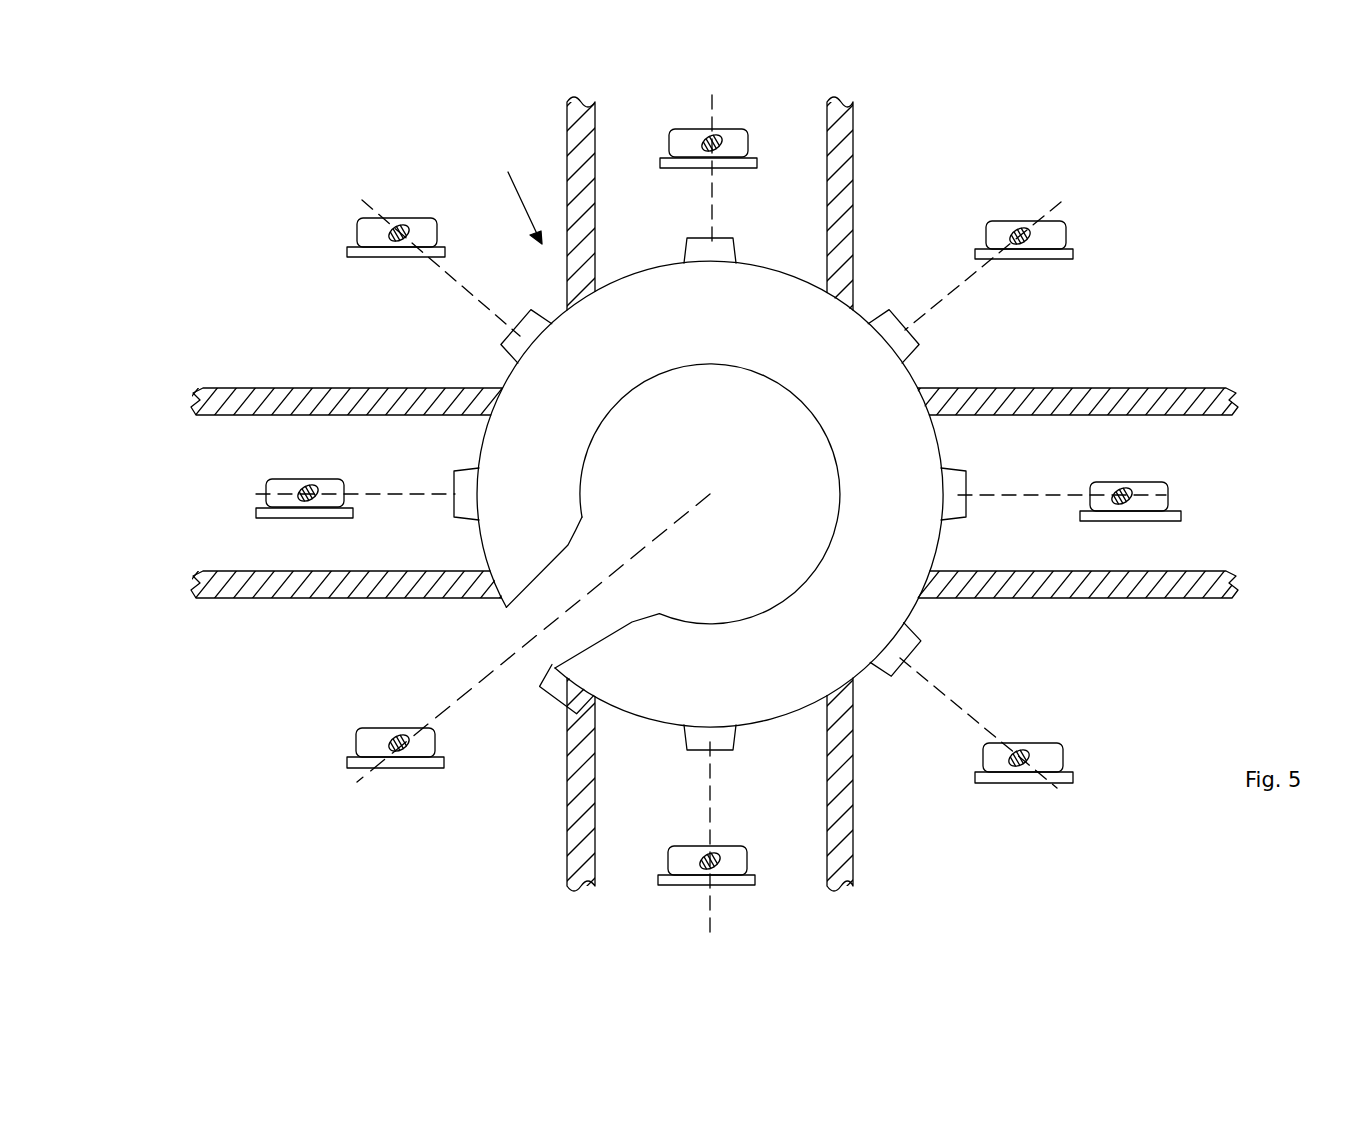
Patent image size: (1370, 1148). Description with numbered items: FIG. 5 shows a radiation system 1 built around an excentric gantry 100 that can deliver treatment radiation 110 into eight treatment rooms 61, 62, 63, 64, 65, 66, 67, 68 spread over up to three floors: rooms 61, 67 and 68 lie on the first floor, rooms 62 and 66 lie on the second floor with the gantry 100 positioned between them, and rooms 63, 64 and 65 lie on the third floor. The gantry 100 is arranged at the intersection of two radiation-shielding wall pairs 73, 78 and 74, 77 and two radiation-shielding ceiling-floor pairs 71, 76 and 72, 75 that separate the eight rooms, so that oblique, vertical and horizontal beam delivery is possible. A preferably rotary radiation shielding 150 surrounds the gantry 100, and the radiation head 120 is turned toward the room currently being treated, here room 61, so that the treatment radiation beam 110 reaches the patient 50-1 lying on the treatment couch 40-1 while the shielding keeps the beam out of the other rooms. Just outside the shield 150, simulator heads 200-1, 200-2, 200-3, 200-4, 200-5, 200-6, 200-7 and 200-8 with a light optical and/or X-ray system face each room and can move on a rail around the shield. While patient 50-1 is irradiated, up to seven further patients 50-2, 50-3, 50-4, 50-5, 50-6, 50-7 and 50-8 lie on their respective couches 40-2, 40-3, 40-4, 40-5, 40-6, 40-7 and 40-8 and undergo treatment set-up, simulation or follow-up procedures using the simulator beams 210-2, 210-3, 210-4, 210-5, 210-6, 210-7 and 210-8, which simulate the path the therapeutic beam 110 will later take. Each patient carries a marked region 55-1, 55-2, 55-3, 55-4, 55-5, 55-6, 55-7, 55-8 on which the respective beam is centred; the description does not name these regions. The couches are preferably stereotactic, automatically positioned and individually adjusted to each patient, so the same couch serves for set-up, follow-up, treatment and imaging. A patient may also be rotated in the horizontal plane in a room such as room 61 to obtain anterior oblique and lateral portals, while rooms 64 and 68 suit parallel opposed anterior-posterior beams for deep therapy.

The radiation system 1 is at (517, 196).
The excentric gantry 100 is at (726, 443).
The treatment radiation beam 110 is at (498, 660).
The radiation head 120 is at (612, 640).
The radiation shielding 150 is at (762, 276).
The simulator head 200-1 is at (558, 708).
The simulator head 200-2 is at (455, 476).
The simulator head 200-3 is at (502, 344).
The simulator head 200-4 is at (733, 242).
The simulator head 200-5 is at (918, 344).
The simulator head 200-6 is at (966, 512).
The simulator head 200-7 is at (921, 645).
The simulator head 200-8 is at (734, 754).
The simulator beam 210-2 is at (382, 497).
The simulator beam 210-3 is at (463, 286).
The simulator beam 210-4 is at (716, 100).
The simulator beam 210-5 is at (958, 284).
The simulator beam 210-6 is at (1058, 491).
The simulator beam 210-7 is at (955, 712).
The simulator beam 210-8 is at (716, 906).
The patient 50-1 is at (356, 742).
The patient 50-2 is at (266, 492).
The patient 50-3 is at (357, 233).
The patient 50-4 is at (669, 142).
The patient 50-5 is at (1066, 234).
The patient 50-6 is at (1168, 495).
The patient 50-7 is at (1063, 758).
The patient 50-8 is at (668, 860).
The light emitting element 55-1 is at (399, 740).
The light emitting element 55-2 is at (308, 489).
The light emitting element 55-3 is at (399, 228).
The light emitting element 55-4 is at (712, 138).
The light emitting element 55-5 is at (1021, 230).
The light emitting element 55-6 is at (1124, 493).
The light emitting element 55-7 is at (1021, 755).
The light emitting element 55-8 is at (710, 856).
The treatment couch 40-1 is at (347, 764).
The treatment couch 40-2 is at (256, 514).
The treatment couch 40-3 is at (347, 253).
The treatment couch 40-4 is at (661, 166).
The treatment couch 40-5 is at (1073, 254).
The treatment couch 40-6 is at (1181, 516).
The treatment couch 40-7 is at (1073, 779).
The treatment couch 40-8 is at (659, 884).
The treatment room 61 is at (360, 856).
The treatment room 62 is at (204, 469).
The treatment room 63 is at (258, 339).
The treatment room 64 is at (816, 157).
The treatment room 65 is at (946, 157).
The treatment room 66 is at (1245, 457).
The treatment room 67 is at (1192, 666).
The treatment room 68 is at (815, 857).
The radiation-shielding ceiling-floor 71 is at (195, 598).
The radiation-shielding ceiling-floor 72 is at (195, 388).
The radiation-shielding wall 73 is at (567, 108).
The radiation-shielding wall 74 is at (854, 108).
The radiation-shielding ceiling-floor 75 is at (1228, 388).
The radiation-shielding ceiling-floor 76 is at (1228, 598).
The radiation-shielding wall 77 is at (853, 870).
The radiation-shielding wall 78 is at (567, 870).